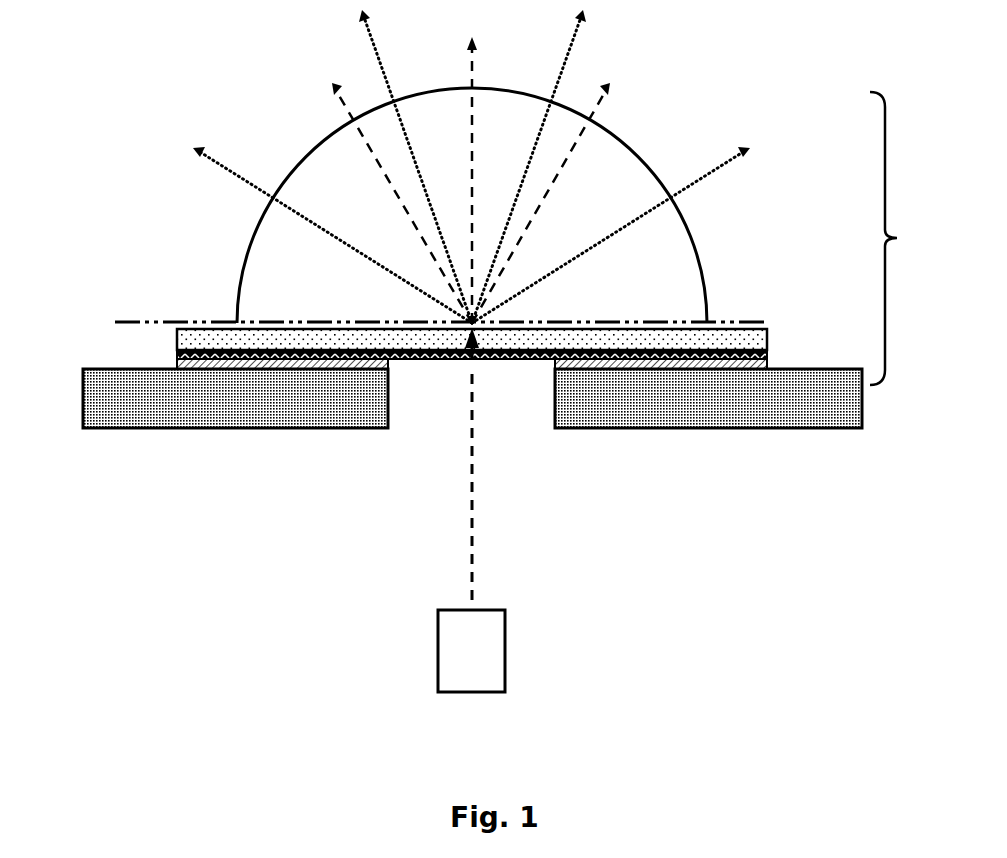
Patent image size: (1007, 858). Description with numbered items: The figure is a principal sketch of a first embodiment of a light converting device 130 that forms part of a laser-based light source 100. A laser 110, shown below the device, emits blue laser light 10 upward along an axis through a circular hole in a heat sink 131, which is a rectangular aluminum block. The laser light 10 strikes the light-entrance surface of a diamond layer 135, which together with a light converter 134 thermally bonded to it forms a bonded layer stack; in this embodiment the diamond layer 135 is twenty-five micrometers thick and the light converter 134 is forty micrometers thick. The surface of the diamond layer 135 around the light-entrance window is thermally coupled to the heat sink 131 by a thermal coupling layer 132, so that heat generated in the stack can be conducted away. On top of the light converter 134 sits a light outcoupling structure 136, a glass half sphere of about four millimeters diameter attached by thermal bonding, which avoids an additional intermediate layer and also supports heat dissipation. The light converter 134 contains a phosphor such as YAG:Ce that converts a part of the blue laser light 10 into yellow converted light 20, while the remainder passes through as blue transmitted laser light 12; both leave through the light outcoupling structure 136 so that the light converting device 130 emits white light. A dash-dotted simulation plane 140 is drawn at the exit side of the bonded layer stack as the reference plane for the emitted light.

The laser-based light source 100 is at (122, 113).
The laser light 10 is at (470, 595).
The transmitted laser light 12 is at (560, 175).
The converted light 20 is at (722, 172).
The laser 110 is at (438, 655).
The light converting device 130 is at (912, 238).
The heat sink 131 is at (660, 428).
The thermal coupling layer 132 is at (556, 367).
The light converter 134 is at (190, 336).
The diamond layer 135 is at (768, 358).
The light outcoupling structure 136 is at (696, 272).
The simulation plane 140 is at (135, 322).